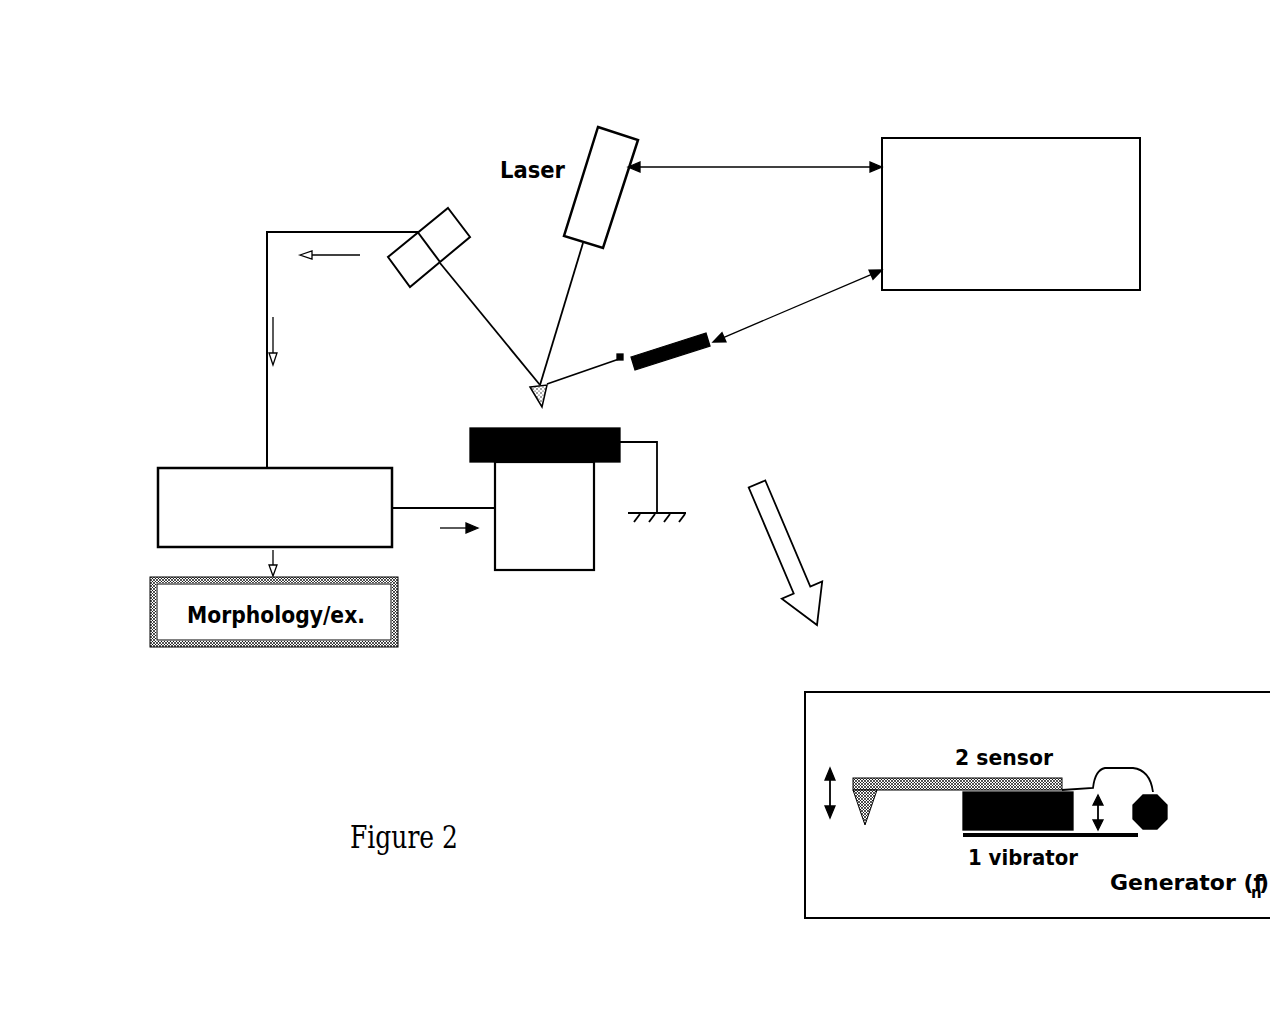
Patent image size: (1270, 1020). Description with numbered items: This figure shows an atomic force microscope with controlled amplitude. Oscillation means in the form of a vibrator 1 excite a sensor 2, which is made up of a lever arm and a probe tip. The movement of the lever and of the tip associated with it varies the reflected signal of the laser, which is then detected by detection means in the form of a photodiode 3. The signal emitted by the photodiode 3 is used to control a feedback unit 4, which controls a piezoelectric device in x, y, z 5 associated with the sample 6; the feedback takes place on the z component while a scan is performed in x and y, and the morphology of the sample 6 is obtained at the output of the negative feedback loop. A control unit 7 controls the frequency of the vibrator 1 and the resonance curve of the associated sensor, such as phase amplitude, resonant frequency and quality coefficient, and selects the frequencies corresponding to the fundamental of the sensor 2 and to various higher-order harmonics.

The vibrator 1 is at (704, 361).
The sensor 2 is at (595, 352).
The photodiode 3 is at (387, 282).
The feedback unit 4 is at (146, 505).
The piezoelectric device in x, y, z 5 is at (537, 581).
The sample 6 is at (479, 409).
The control unit 7 is at (1004, 126).